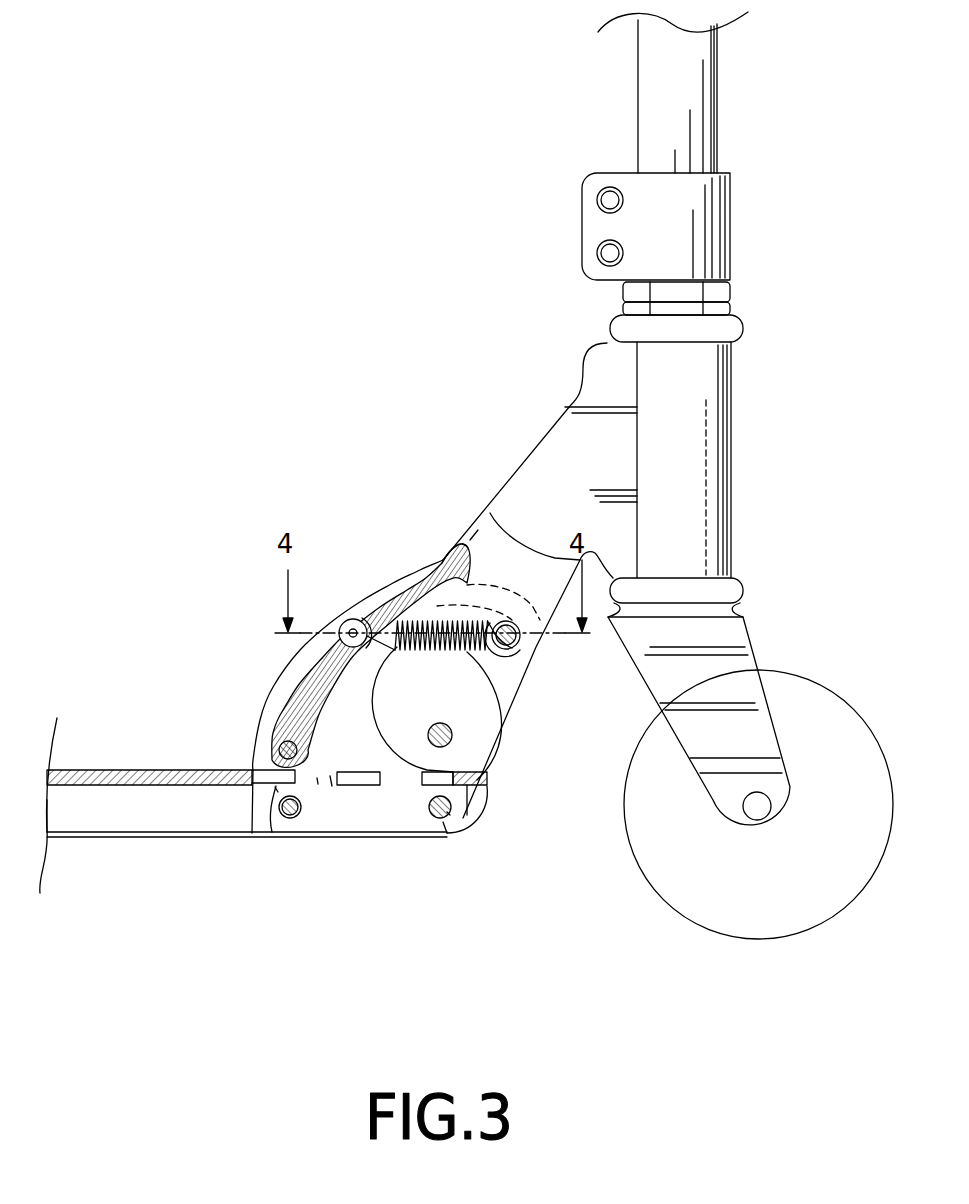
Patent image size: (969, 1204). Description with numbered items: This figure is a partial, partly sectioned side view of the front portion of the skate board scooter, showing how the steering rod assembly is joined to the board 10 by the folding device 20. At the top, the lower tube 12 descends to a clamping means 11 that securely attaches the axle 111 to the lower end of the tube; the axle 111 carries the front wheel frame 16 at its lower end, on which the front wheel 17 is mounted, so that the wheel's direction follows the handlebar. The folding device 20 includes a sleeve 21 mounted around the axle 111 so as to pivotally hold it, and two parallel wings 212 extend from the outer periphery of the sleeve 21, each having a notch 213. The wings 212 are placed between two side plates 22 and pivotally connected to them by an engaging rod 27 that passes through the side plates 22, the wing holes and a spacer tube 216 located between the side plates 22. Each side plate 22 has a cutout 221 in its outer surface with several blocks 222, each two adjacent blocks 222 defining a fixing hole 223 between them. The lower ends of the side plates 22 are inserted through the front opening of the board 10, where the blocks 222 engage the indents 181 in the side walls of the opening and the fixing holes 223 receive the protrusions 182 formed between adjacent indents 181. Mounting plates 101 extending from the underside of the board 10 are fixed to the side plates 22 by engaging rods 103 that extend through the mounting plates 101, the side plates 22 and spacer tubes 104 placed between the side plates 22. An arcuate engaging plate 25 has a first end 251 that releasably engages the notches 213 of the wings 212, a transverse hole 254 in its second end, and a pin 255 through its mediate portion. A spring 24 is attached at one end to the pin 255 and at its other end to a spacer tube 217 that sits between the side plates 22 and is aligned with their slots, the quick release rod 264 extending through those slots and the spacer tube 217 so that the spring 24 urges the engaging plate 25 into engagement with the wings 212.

The board 10 is at (110, 768).
The mounting plates 101 is at (137, 818).
The engaging rods 103 is at (443, 822).
The spacer tubes 104 is at (450, 812).
The clamping means 11 is at (718, 218).
The axle 111 is at (733, 330).
The lower tube 12 is at (703, 80).
The front wheel frame 16 is at (743, 691).
The front wheel 17 is at (728, 928).
The indents 181 is at (332, 786).
The protrusion 182 is at (357, 786).
The folding device 20 is at (387, 626).
The sleeve 21 is at (750, 409).
The wings 212 is at (557, 440).
The notch 213 is at (478, 530).
The spacer tube 216 is at (452, 738).
The spacer tube 217 is at (519, 641).
The side plates 22 is at (290, 672).
The cutout 221 is at (275, 790).
The blocks 222 is at (317, 780).
The fixing hole 223 is at (372, 786).
The spring 24 is at (470, 652).
The engaging plate 25 is at (388, 590).
The first end 251 is at (440, 560).
The transverse hole 254 is at (298, 754).
The pin 255 is at (348, 630).
The quick release rod 264 is at (512, 648).
The engaging rod 27 is at (452, 805).